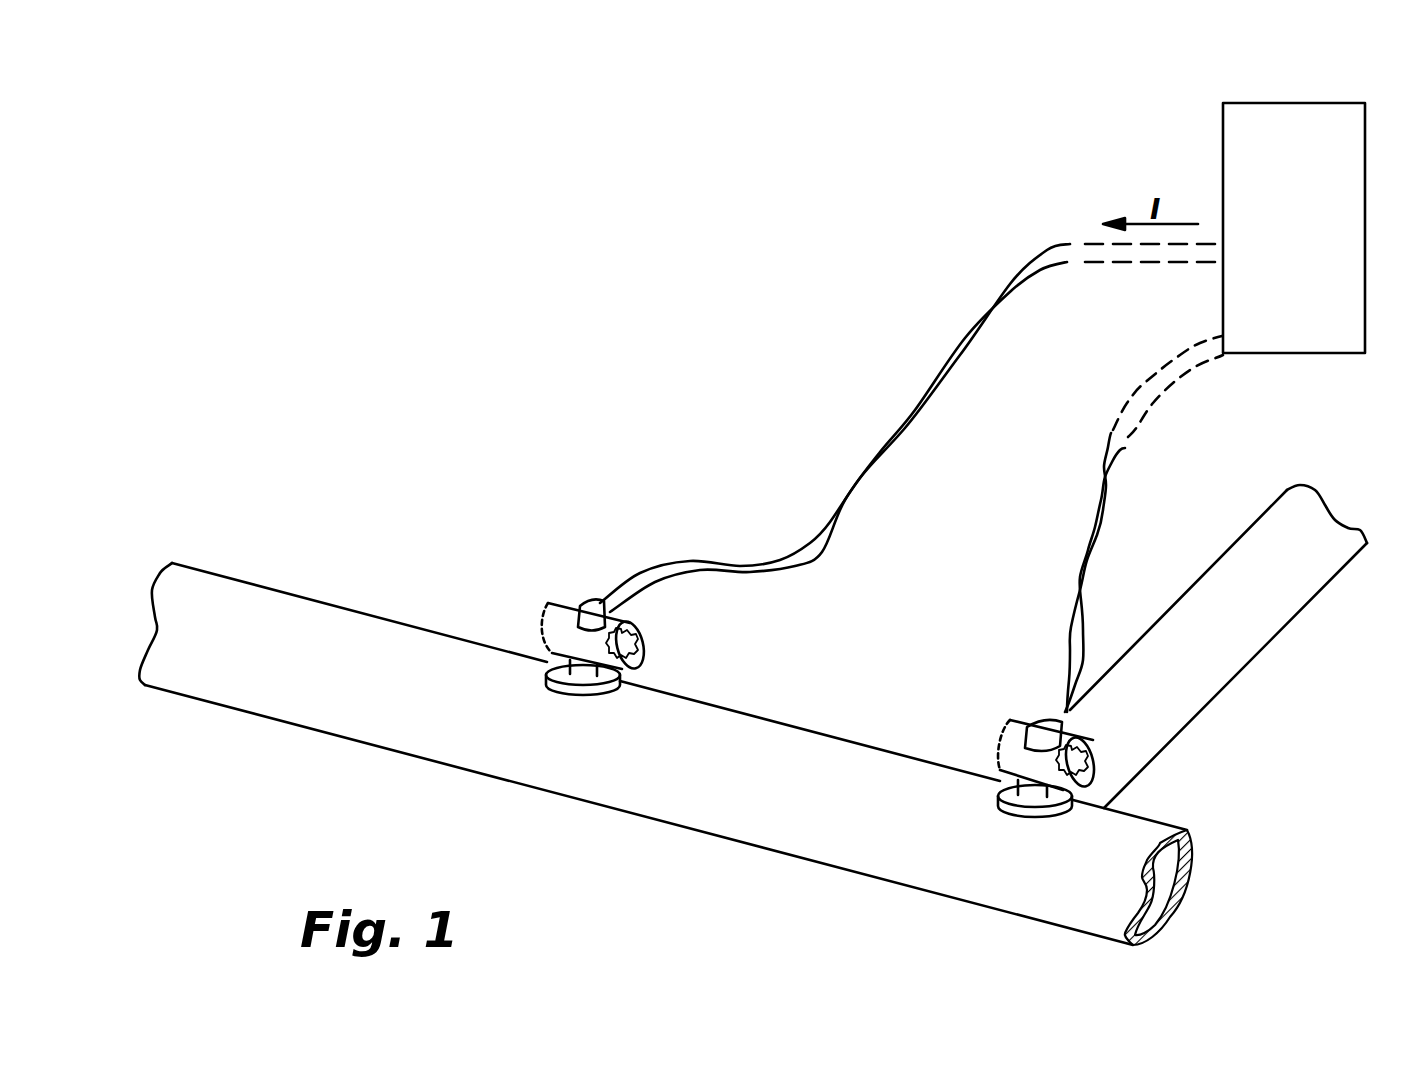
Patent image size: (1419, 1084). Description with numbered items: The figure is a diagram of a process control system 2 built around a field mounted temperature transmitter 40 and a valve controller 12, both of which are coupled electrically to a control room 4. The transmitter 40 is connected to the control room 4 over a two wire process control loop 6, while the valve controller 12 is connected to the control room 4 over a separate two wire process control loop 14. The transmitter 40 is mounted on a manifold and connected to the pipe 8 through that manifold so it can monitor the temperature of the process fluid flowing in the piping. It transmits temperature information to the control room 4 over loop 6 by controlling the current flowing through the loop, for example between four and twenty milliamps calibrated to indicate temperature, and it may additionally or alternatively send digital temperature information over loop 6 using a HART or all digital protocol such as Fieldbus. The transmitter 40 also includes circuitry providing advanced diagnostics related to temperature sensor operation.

The process control system 2 is at (280, 474).
The control room 4 is at (1360, 197).
The two wire process control loop 6 is at (890, 440).
The pipe 8 is at (296, 702).
The valve controller 12 is at (1100, 750).
The two wire process control loop 14 is at (1107, 447).
The field mounted temperature transmitter 40 is at (645, 632).